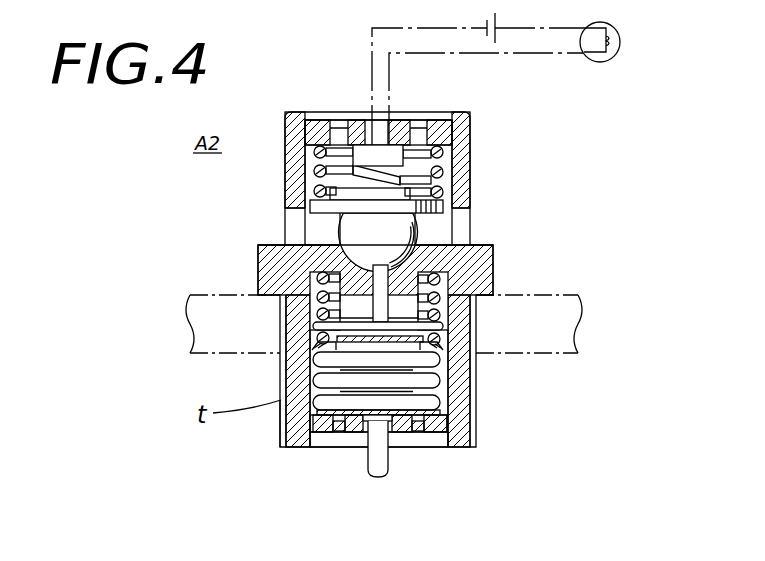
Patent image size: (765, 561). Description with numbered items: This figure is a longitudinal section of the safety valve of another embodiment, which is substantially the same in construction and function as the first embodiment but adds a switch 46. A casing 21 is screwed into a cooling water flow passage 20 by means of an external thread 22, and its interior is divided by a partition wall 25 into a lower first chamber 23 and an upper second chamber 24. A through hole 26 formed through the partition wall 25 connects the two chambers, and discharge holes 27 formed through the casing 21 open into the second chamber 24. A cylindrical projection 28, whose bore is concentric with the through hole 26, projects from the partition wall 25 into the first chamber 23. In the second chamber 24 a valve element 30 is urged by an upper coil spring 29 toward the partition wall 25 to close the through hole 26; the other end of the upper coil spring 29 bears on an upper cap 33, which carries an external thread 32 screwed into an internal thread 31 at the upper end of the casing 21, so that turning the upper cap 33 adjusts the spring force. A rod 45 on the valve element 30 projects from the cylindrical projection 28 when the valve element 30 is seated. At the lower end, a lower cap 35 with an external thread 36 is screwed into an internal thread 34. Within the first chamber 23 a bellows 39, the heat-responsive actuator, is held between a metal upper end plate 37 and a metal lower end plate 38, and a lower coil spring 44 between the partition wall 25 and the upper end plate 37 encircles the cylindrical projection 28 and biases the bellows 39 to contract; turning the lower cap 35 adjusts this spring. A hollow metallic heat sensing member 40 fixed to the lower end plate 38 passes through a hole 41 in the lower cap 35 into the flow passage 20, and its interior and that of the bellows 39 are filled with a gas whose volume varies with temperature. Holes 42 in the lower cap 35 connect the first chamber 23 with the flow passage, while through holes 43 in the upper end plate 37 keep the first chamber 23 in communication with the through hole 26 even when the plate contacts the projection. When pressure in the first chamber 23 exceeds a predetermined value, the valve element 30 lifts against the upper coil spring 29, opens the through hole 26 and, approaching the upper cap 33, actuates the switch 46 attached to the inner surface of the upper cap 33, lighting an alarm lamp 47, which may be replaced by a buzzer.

The cooling water flow passage 20 is at (583, 325).
The casing 21 is at (490, 260).
The external thread 22 is at (473, 430).
The first chamber 23 is at (442, 398).
The second chamber 24 is at (458, 188).
The partition wall 25 is at (470, 244).
The through hole 26 is at (440, 297).
The discharge holes 27 is at (292, 222).
The cylindrical projection 28 is at (443, 323).
The upper coil spring 29 is at (450, 152).
The valve element 30 is at (396, 249).
The internal thread 31 is at (315, 127).
The external thread 32 is at (473, 126).
The upper cap 33 is at (440, 125).
The internal thread 34 is at (285, 418).
The lower cap 35 is at (352, 435).
The external thread 36 is at (286, 446).
The upper end plate 37 is at (425, 340).
The lower end plate 38 is at (427, 435).
The bellows 39 is at (282, 377).
The heat sensing member 40 is at (378, 478).
The hole 41 is at (390, 432).
The holes 42 is at (310, 448).
The through holes 43 is at (330, 345).
The lower coil spring 44 is at (363, 317).
The rod 45 is at (377, 287).
The switch 46 is at (385, 152).
The alarm lamp 47 is at (622, 40).